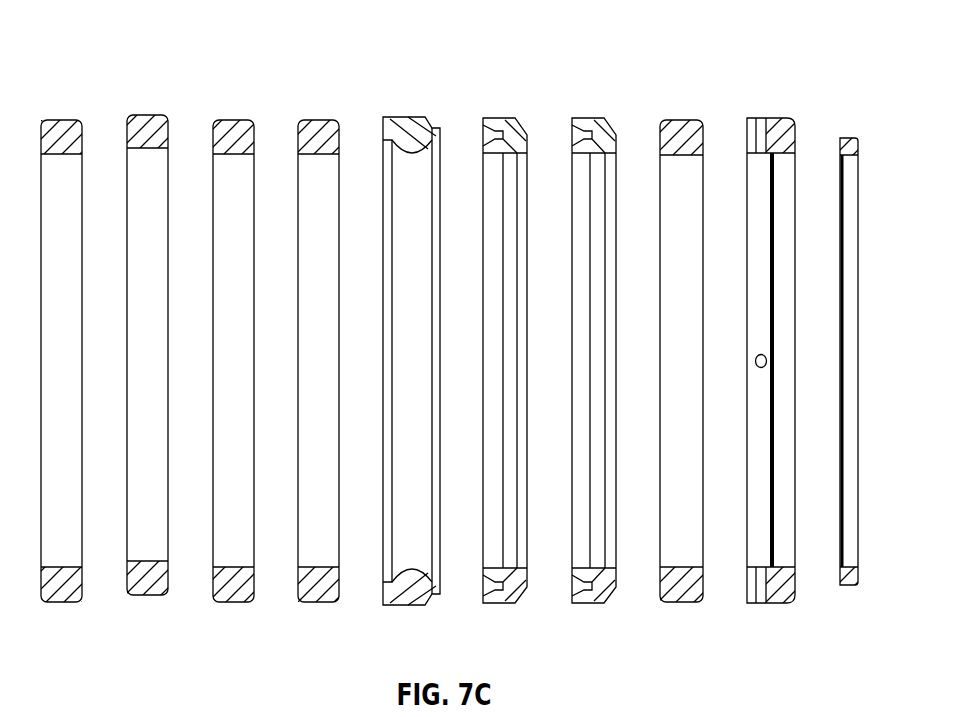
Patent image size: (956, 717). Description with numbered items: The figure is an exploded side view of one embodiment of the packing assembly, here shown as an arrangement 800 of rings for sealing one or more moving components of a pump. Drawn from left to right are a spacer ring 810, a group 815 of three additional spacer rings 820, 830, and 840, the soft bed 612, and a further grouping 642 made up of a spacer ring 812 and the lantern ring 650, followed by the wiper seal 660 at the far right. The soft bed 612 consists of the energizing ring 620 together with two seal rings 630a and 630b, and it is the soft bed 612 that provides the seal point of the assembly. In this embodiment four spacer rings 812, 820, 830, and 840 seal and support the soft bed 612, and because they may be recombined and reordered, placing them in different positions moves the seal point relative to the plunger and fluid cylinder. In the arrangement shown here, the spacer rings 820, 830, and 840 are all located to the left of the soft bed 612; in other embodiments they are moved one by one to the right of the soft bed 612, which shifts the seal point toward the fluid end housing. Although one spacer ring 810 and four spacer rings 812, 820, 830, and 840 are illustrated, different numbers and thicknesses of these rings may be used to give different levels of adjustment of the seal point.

The exploded assembly 800 is at (90, 38).
The spacer ring 810 is at (68, 127).
The layer stack 815 is at (127, 605).
The spacer ring 820 is at (152, 124).
The spacer ring 830 is at (237, 127).
The spacer ring 840 is at (322, 127).
The soft bed 612 is at (382, 605).
The energizing ring 620 is at (405, 124).
The seal ring 630a is at (505, 127).
The seal ring 630b is at (596, 127).
The panel assembly 642 is at (797, 605).
The spacer ring 812 is at (685, 126).
The lantern ring 650 is at (778, 124).
The wiper seal 660 is at (850, 140).